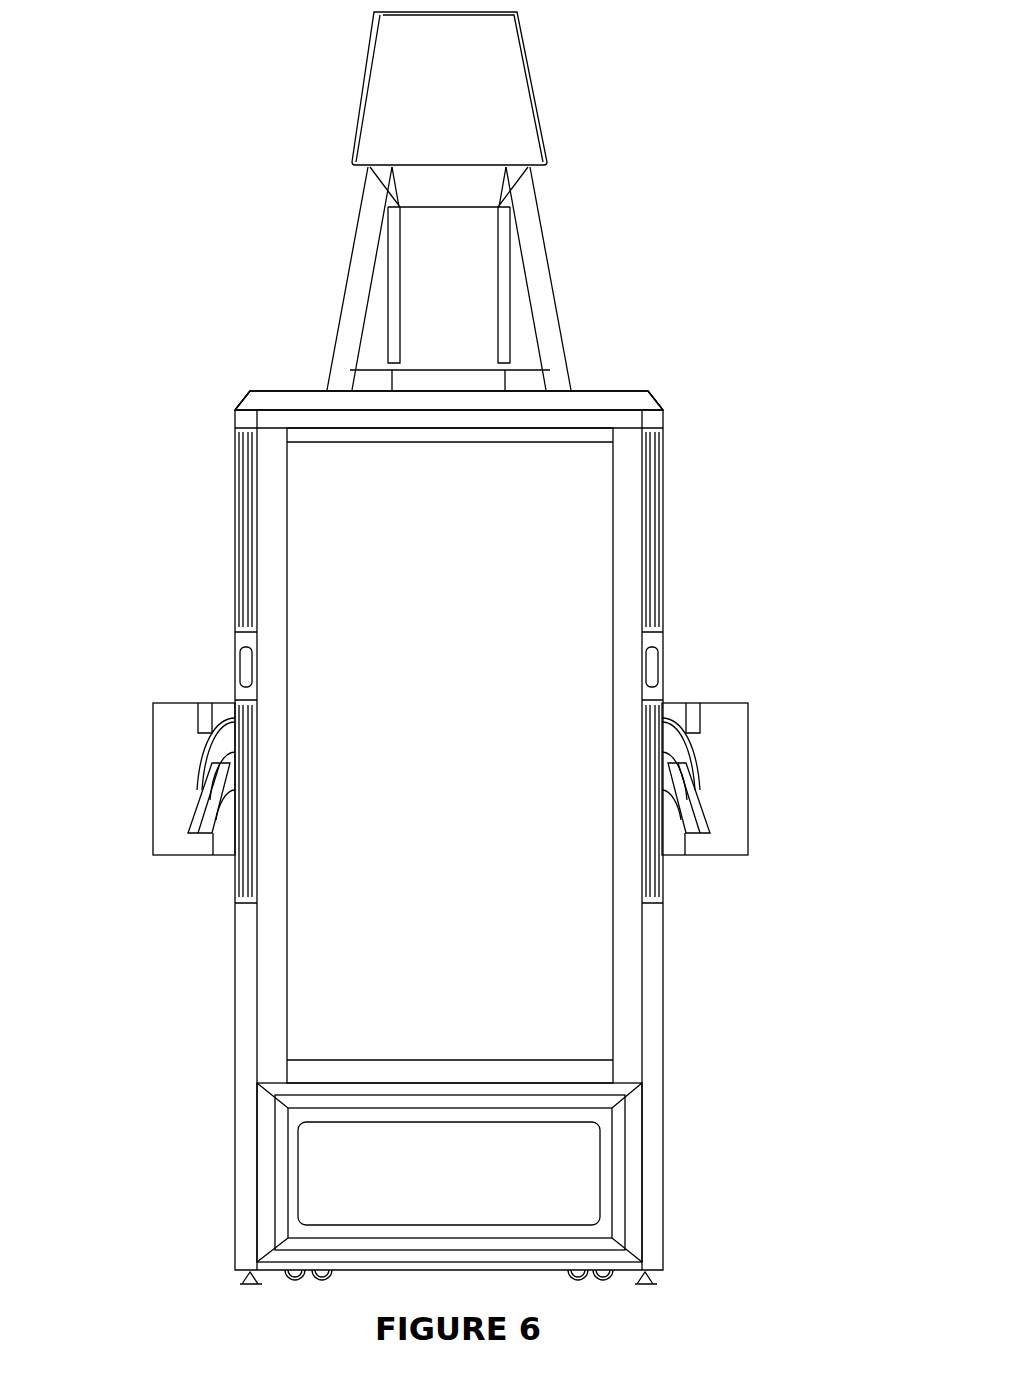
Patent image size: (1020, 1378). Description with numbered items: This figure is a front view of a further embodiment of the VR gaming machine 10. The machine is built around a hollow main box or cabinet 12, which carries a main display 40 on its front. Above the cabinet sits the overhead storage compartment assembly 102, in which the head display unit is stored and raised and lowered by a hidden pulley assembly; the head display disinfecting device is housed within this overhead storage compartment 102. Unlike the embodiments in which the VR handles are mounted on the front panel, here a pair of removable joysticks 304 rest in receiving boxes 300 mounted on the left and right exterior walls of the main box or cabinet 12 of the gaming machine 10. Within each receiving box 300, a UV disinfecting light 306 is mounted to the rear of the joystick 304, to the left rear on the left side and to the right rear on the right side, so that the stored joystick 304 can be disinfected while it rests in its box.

The VR gaming machine 10 is at (688, 452).
The main box or cabinet 12 is at (603, 412).
The main display 40 is at (440, 617).
The overhead storage compartment assembly 102 is at (435, 78).
The receiving box 300 is at (156, 750).
The joystick 304 is at (210, 797).
The UV disinfecting light 306 is at (197, 732).